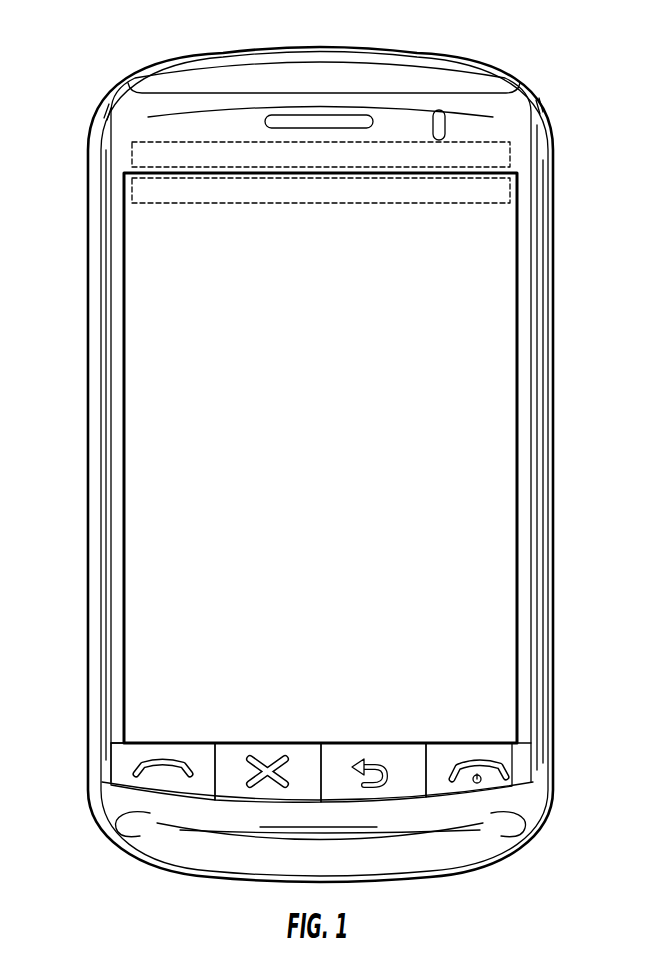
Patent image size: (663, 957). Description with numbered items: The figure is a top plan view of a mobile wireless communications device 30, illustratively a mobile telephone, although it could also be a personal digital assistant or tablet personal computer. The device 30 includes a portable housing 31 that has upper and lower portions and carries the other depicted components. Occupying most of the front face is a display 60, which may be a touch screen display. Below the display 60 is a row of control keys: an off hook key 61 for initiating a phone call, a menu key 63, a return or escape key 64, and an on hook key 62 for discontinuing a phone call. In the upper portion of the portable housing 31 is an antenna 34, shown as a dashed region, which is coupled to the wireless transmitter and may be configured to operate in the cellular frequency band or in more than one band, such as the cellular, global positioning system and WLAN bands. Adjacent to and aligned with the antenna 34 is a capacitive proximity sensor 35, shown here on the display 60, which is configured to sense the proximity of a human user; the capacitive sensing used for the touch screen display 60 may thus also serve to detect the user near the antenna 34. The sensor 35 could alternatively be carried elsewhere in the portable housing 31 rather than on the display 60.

The mobile wireless communications device 30 is at (441, 45).
The portable housing 31 is at (88, 231).
The antenna 34 is at (143, 140).
The capacitive proximity sensor 35 is at (132, 188).
The display 60 is at (485, 475).
The off hook key 61 is at (122, 765).
The on hook key 62 is at (513, 753).
The menu key 63 is at (237, 787).
The return or escape key 64 is at (382, 792).